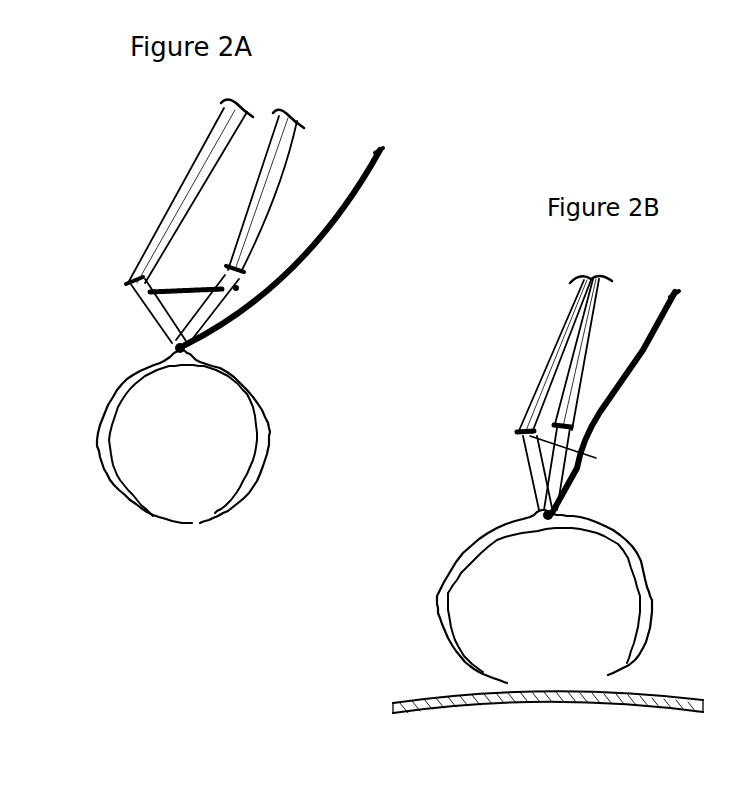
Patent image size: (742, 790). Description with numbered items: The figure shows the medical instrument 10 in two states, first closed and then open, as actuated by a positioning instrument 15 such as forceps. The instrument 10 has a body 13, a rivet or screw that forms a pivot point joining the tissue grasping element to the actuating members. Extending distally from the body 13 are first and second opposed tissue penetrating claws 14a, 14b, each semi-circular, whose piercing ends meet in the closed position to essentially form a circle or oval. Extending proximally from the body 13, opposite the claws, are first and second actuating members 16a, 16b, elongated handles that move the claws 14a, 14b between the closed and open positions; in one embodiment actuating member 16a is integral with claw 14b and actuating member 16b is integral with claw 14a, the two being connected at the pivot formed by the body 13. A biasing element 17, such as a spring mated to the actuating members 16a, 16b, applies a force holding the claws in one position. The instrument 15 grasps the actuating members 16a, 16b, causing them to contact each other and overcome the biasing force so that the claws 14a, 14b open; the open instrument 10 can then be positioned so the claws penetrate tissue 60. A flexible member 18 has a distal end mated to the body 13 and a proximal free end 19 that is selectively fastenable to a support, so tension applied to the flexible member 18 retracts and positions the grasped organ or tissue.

In FIG. 2A, the medical instrument 10 is at (85, 107).
In FIG. 2B, the medical instrument 10 is at (515, 271).
In FIG. 2A, the body 13 is at (176, 350).
In FIG. 2A, the first tissue penetrating claw 14a is at (98, 429).
In FIG. 2B, the first tissue penetrating claw 14a is at (437, 607).
In FIG. 2A, the second tissue penetrating claw 14b is at (268, 420).
In FIG. 2B, the second tissue penetrating claw 14b is at (652, 600).
In FIG. 2A, the instrument 15 is at (196, 168).
In FIG. 2B, the instrument 15 is at (557, 340).
In FIG. 2A, the first actuating member 16a is at (152, 318).
In FIG. 2B, the first actuating member 16a is at (530, 458).
In FIG. 2A, the second actuating member 16b is at (210, 315).
In FIG. 2B, the second actuating member 16b is at (560, 470).
In FIG. 2A, the biasing element 17 is at (181, 290).
In FIG. 2B, the biasing element 17 is at (575, 453).
In FIG. 2A, the flexible member 18 is at (325, 235).
In FIG. 2B, the flexible member 18 is at (643, 357).
In FIG. 2A, the free end 19 is at (383, 150).
In FIG. 2B, the free end 19 is at (680, 294).
In FIG. 2B, the tissue 60 is at (416, 698).